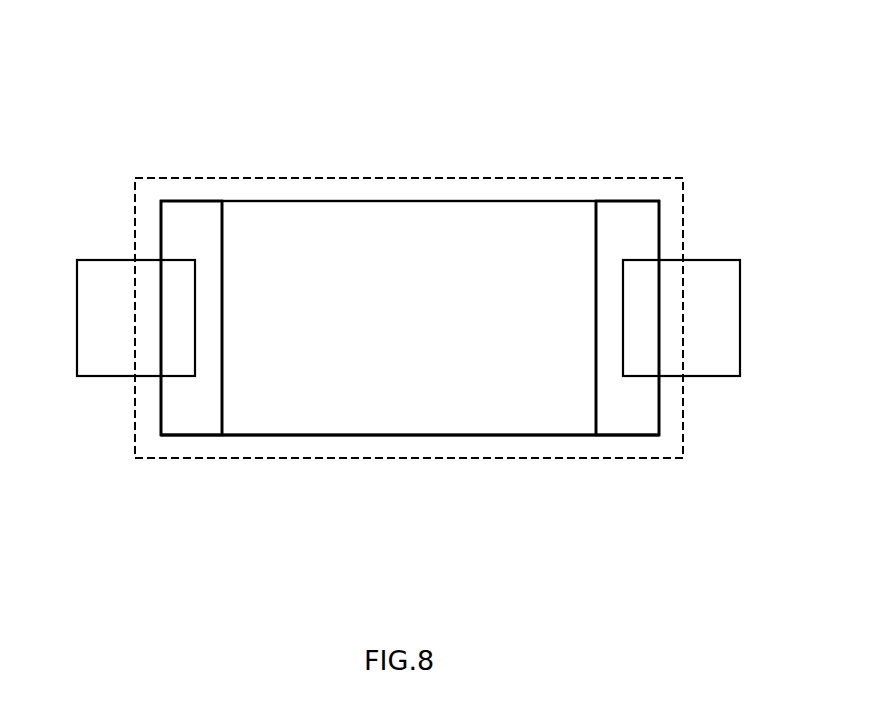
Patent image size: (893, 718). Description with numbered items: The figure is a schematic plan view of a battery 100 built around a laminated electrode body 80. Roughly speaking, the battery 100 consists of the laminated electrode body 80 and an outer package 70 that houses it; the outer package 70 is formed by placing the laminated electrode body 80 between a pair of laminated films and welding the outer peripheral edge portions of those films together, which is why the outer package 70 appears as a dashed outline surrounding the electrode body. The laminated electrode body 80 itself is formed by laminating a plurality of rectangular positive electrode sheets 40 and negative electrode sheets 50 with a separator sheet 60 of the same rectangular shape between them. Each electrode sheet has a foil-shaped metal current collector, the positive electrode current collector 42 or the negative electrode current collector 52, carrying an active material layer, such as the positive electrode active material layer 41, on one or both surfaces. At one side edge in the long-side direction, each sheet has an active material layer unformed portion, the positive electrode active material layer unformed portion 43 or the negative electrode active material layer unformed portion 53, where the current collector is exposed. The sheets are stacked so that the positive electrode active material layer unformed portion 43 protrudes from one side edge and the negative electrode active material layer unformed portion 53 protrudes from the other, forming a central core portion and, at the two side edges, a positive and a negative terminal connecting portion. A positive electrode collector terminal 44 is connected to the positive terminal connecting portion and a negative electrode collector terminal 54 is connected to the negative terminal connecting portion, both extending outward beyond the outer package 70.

The battery 100 is at (104, 77).
The positive electrode sheet 40 is at (190, 440).
The positive electrode active material layer 41 is at (360, 391).
The positive electrode current collector 42 is at (182, 197).
The positive electrode active material layer unformed portion 43 is at (191, 318).
The positive electrode collector terminal 44 is at (83, 302).
The negative electrode sheet 50 is at (630, 440).
The negative electrode current collector 52 is at (622, 197).
The negative electrode active material layer unformed portion 53 is at (627, 318).
The negative electrode collector terminal 54 is at (727, 322).
The separator sheet 60 is at (390, 220).
The outer package 70 is at (478, 177).
The laminated electrode body 80 is at (515, 437).